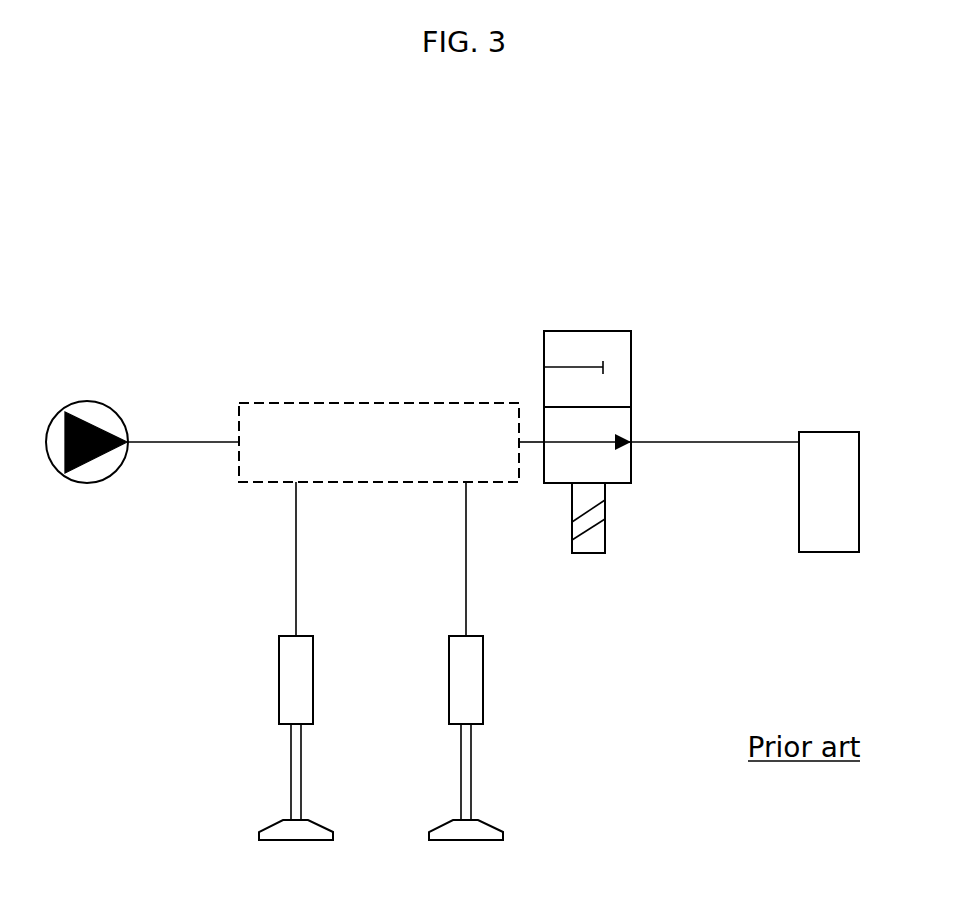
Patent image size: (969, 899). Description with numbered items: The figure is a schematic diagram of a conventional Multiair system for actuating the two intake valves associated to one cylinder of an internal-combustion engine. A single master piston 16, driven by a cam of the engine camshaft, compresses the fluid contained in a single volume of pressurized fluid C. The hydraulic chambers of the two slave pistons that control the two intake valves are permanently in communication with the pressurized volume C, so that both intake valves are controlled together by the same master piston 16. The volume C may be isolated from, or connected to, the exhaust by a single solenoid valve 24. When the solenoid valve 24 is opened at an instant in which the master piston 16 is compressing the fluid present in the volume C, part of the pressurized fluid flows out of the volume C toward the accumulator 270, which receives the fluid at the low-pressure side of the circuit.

The master piston 16 is at (107, 401).
The volume of pressurized fluid C is at (377, 403).
The solenoid valve 24 is at (616, 326).
The accumulator 270 is at (833, 540).